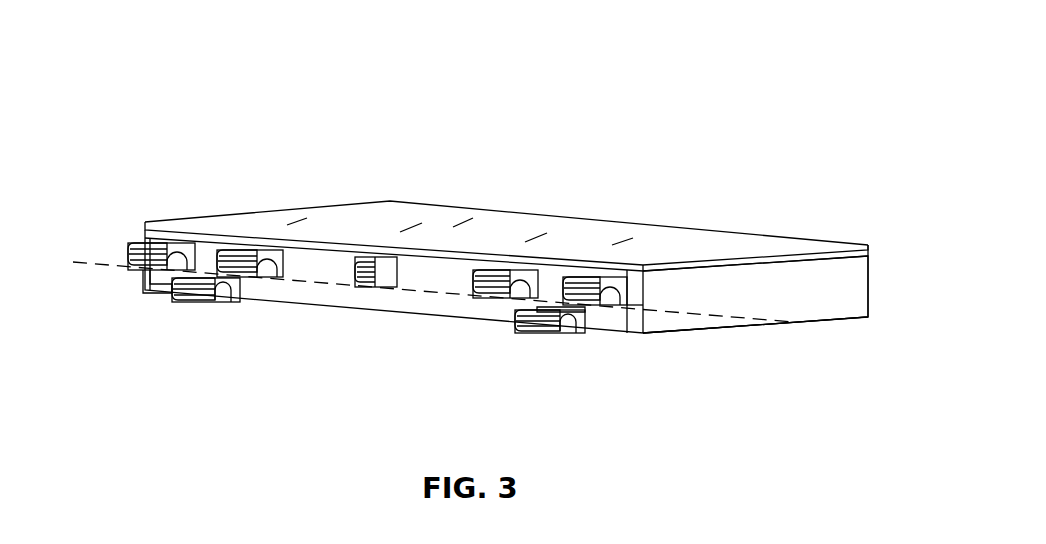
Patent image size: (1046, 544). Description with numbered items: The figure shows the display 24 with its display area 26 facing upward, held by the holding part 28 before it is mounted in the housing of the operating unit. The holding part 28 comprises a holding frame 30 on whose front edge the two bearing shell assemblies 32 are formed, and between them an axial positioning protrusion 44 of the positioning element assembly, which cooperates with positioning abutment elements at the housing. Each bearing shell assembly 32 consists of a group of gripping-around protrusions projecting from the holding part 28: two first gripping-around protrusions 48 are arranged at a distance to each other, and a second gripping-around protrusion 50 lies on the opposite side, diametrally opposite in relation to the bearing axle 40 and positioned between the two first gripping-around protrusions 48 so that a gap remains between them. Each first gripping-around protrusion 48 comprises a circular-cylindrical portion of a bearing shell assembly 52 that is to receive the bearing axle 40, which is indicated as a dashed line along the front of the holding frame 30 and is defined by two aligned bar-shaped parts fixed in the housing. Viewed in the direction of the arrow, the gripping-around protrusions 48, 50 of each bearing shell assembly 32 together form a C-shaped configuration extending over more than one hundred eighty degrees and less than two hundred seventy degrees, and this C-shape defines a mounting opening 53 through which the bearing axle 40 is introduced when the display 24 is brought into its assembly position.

The display 24 is at (712, 173).
The display area 26 is at (394, 216).
The holding part 28 is at (790, 382).
The holding frame 30 is at (788, 290).
The bearing shell assembly 32 is at (170, 309).
The bearing axle 40 is at (105, 265).
The axial positioning protrusion 44 is at (380, 273).
The first gripping-around protrusion 48 is at (143, 240).
The second gripping-around protrusion 50 is at (200, 296).
The circular-cylindrical portion of bearing shell assembly 52 is at (160, 252).
The mounting opening 53 is at (253, 272).